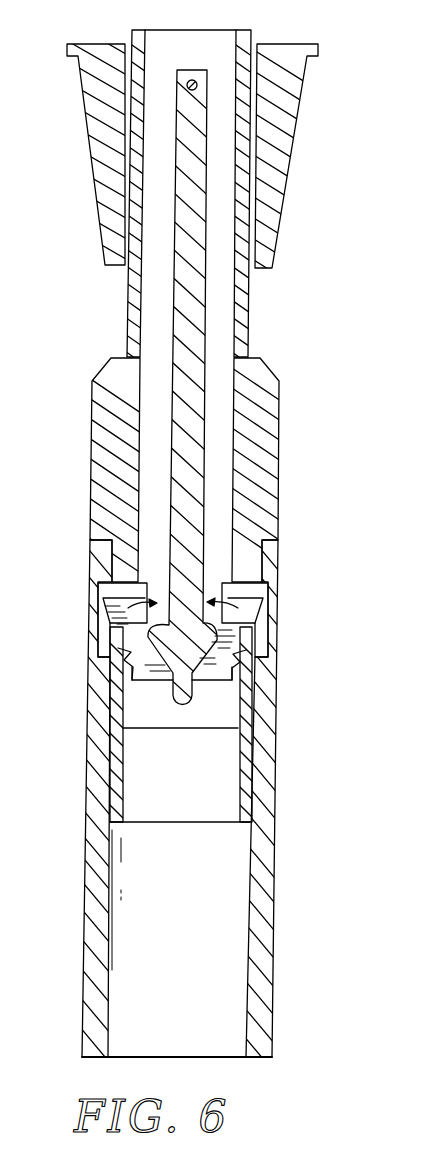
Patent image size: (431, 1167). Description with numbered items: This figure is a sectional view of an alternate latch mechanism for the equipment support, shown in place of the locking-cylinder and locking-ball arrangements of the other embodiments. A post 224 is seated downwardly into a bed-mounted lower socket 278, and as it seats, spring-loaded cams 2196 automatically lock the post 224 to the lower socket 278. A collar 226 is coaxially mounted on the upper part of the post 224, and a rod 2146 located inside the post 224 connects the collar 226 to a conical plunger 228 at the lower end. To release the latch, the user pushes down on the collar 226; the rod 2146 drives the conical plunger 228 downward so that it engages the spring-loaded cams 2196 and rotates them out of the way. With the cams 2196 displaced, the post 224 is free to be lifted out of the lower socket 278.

The collar 226 is at (283, 140).
The post 224 is at (255, 402).
The rod 2146 is at (188, 330).
The cams 2196 is at (148, 653).
The conical plunger 228 is at (178, 637).
The lower socket 278 is at (262, 815).